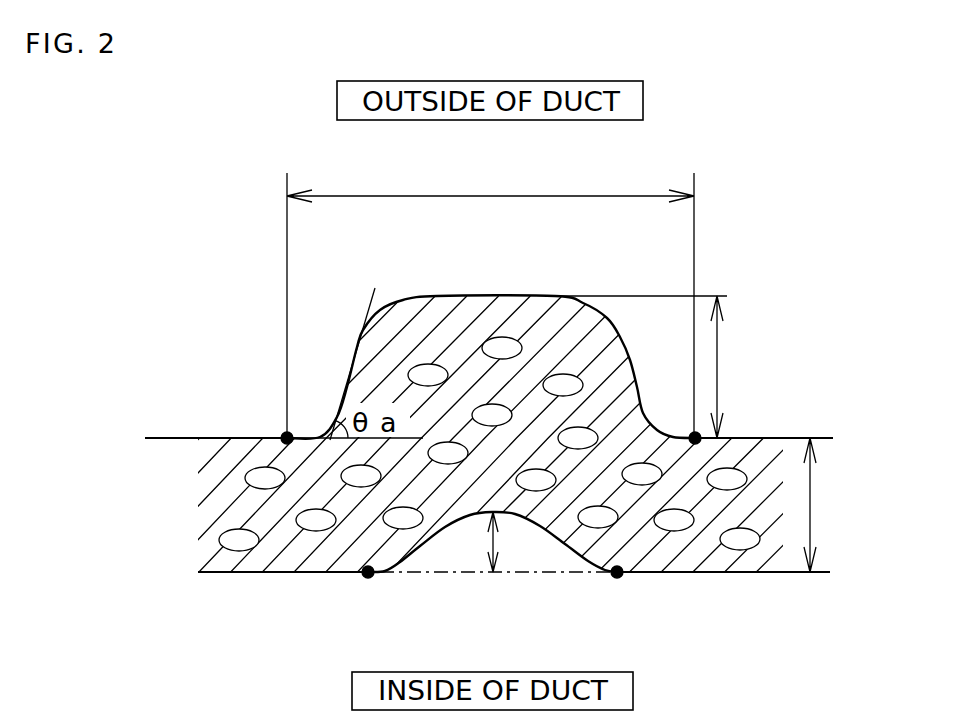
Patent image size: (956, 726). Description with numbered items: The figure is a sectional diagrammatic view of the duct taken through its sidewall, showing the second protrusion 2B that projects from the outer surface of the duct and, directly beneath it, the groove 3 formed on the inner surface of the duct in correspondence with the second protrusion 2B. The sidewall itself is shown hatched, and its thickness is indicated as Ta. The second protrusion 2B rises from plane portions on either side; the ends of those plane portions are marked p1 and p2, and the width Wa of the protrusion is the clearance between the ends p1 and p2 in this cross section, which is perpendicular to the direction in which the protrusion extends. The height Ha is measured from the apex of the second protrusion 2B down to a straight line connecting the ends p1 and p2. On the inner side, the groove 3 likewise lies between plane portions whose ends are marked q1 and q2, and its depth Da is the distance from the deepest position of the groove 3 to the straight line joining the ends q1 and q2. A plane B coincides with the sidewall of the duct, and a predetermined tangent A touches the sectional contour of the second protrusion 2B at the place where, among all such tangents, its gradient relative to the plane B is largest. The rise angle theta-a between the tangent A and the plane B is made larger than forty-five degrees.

The second protrusion 2B is at (445, 296).
The groove 3 is at (553, 538).
The predetermined tangent A is at (358, 346).
The plane B is at (475, 440).
The end of plane portion p1 is at (303, 416).
The end of plane portion p2 is at (680, 416).
The end of plane portion q1 is at (373, 587).
The end of plane portion q2 is at (623, 587).
The width of the second protrusion Wa is at (490, 299).
The height of the second protrusion Ha is at (658, 367).
The thickness of a sidewall of the duct Ta is at (825, 505).
The depth of the groove Da is at (513, 542).